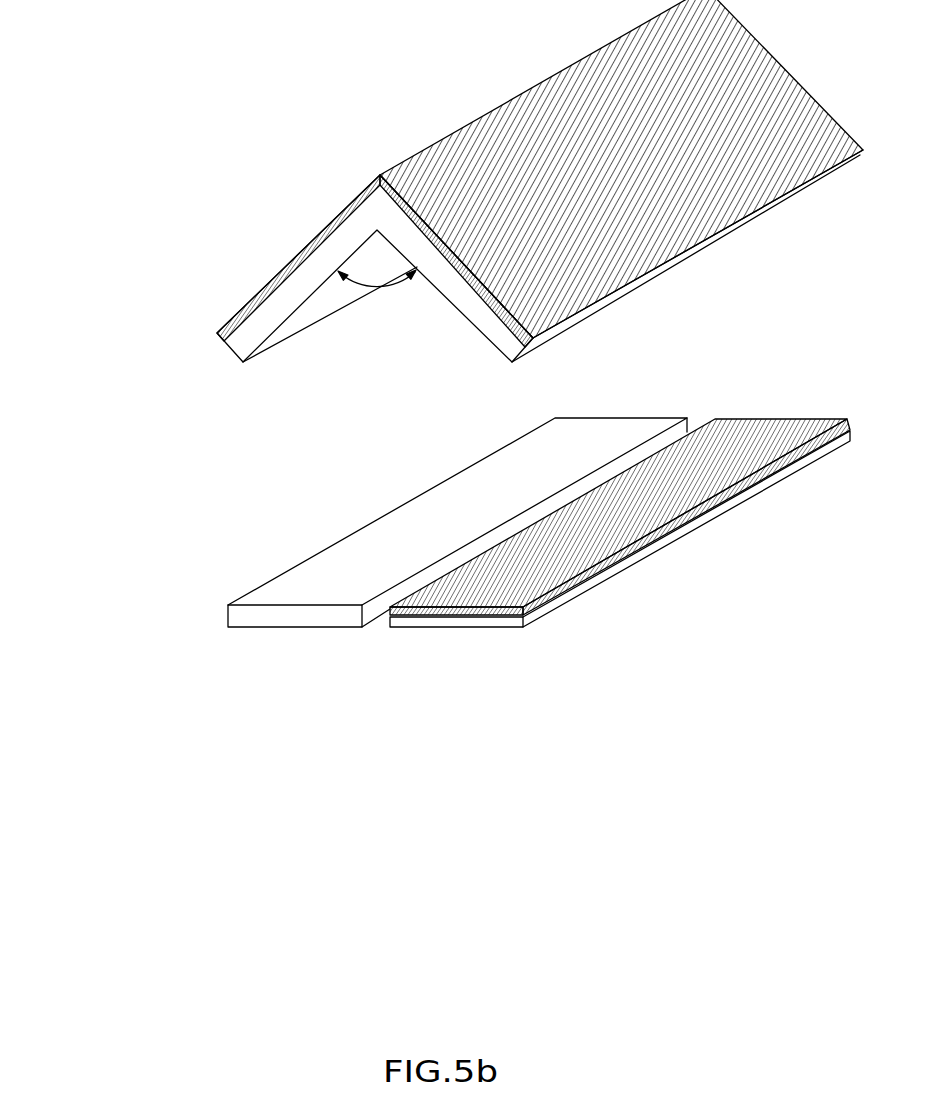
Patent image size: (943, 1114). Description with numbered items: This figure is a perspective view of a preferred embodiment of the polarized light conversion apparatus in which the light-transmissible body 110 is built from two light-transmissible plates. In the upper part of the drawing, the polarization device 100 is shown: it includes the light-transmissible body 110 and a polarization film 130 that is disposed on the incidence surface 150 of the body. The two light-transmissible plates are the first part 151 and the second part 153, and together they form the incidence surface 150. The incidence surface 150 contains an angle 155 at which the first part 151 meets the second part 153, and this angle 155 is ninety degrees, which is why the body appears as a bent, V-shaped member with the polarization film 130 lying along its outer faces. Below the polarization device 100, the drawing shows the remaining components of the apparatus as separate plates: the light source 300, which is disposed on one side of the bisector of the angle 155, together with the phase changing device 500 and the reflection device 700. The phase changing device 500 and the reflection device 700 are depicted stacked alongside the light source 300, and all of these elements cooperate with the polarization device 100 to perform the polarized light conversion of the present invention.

The polarization device 100 is at (123, 208).
The light-transmissible body 110 is at (260, 335).
The polarization film 130 is at (270, 270).
The incidence surface 150 is at (457, 67).
The first part 151 is at (337, 222).
The second part 153 is at (417, 212).
The angle 155 is at (377, 287).
The light source 300 is at (263, 617).
The phase changing device 500 is at (487, 610).
The reflection device 700 is at (438, 620).